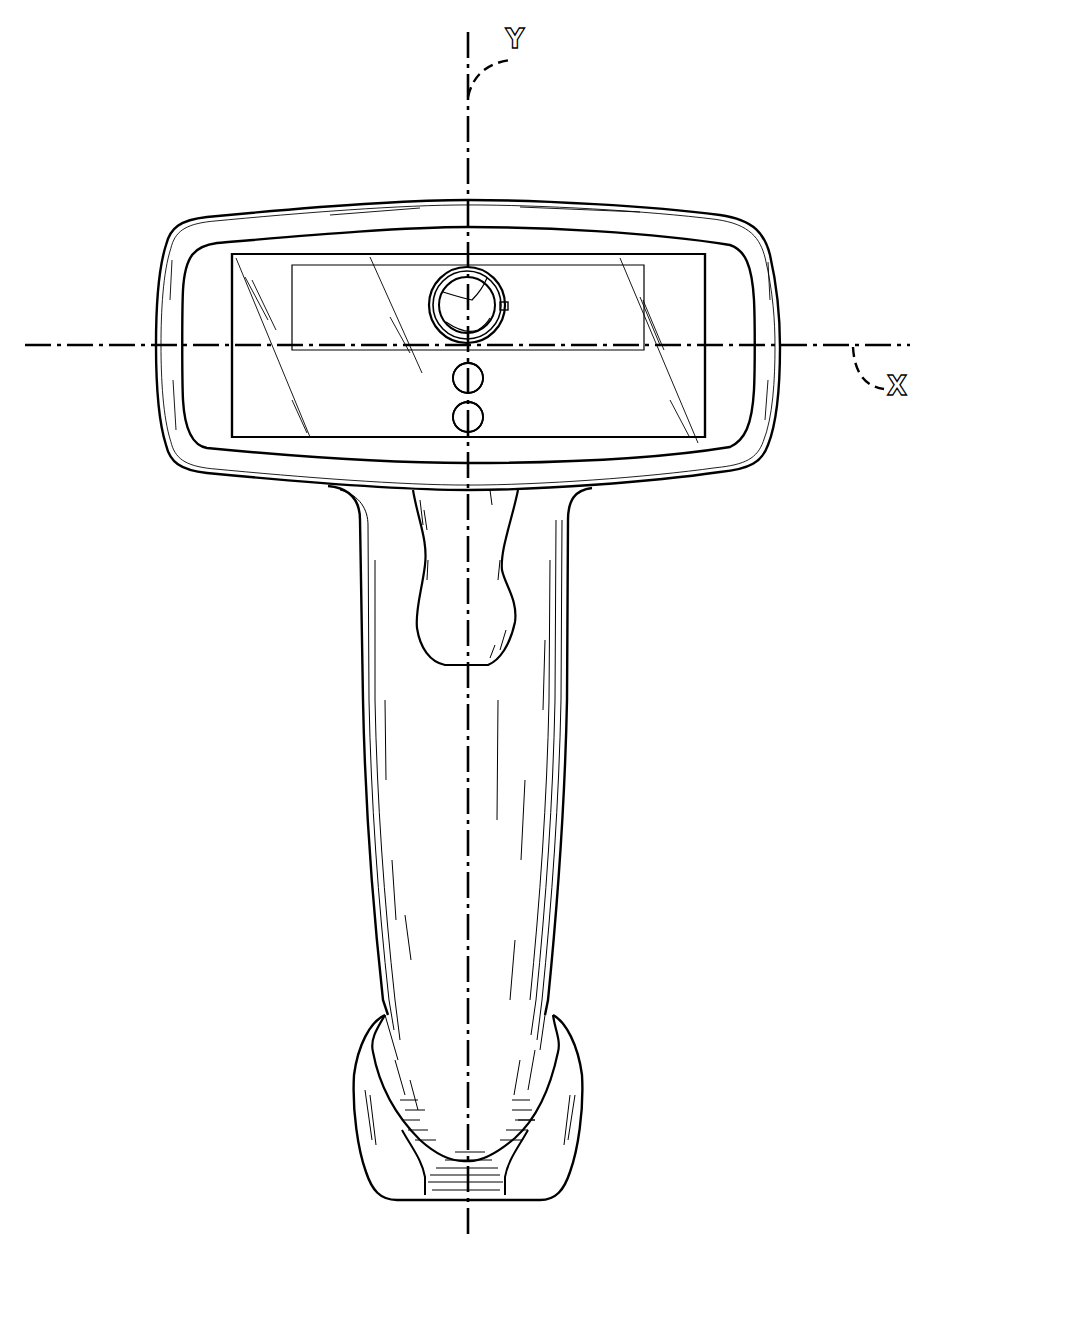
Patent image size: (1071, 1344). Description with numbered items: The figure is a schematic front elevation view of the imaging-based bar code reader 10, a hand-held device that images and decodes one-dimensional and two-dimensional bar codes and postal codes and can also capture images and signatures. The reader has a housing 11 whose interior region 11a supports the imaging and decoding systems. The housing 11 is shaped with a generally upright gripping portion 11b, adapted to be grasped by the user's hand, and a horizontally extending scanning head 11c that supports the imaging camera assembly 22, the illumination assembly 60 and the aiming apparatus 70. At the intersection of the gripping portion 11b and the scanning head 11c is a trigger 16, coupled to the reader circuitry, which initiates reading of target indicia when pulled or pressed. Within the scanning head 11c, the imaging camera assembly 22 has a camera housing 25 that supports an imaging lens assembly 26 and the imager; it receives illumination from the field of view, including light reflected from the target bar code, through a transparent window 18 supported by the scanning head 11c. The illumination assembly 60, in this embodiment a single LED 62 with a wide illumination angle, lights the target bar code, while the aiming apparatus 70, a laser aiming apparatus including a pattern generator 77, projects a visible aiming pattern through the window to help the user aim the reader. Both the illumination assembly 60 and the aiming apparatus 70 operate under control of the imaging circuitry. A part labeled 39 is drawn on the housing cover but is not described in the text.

The imaging-based bar code reader 10 is at (702, 94).
The housing 11 is at (335, 656).
The interior region 11a is at (260, 398).
The gripping portion 11b is at (558, 890).
The scanning head 11c is at (672, 480).
The trigger 16 is at (458, 600).
The transparent window 18 is at (328, 390).
The imaging camera assembly 22 is at (608, 259).
The imaging camera housing 25 is at (395, 265).
The imaging lens assembly 26 is at (412, 288).
The housing cover 39 is at (277, 228).
The illumination assembly 60 is at (473, 452).
The LED 62 is at (483, 415).
The aiming apparatus 70 is at (435, 392).
The pattern generator 77 is at (483, 380).